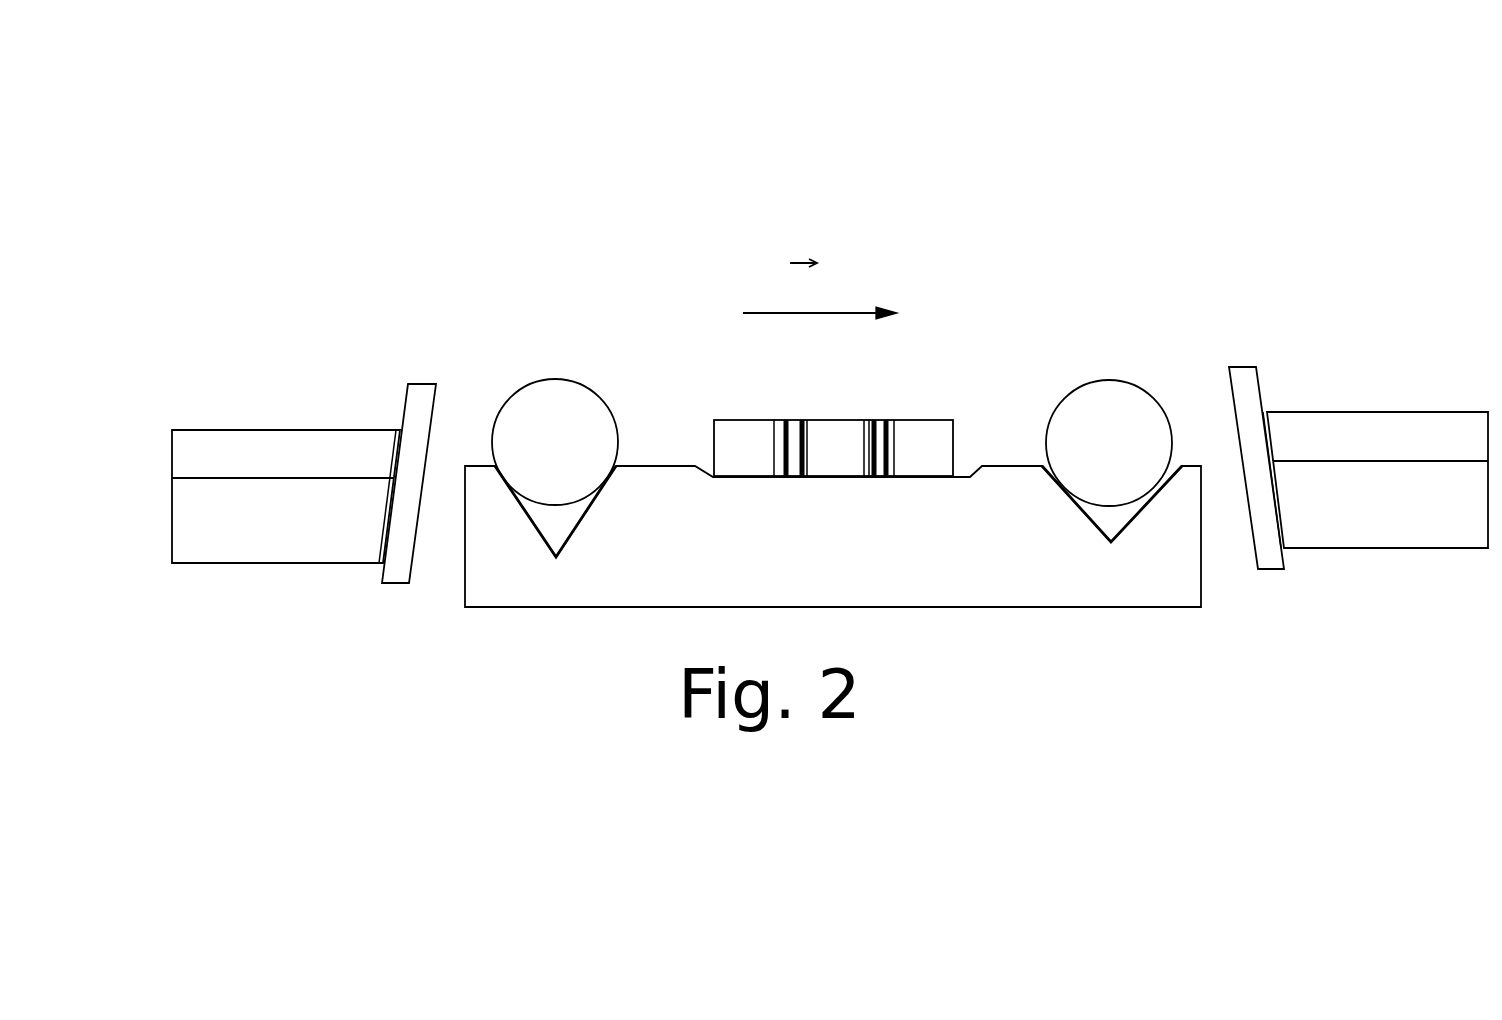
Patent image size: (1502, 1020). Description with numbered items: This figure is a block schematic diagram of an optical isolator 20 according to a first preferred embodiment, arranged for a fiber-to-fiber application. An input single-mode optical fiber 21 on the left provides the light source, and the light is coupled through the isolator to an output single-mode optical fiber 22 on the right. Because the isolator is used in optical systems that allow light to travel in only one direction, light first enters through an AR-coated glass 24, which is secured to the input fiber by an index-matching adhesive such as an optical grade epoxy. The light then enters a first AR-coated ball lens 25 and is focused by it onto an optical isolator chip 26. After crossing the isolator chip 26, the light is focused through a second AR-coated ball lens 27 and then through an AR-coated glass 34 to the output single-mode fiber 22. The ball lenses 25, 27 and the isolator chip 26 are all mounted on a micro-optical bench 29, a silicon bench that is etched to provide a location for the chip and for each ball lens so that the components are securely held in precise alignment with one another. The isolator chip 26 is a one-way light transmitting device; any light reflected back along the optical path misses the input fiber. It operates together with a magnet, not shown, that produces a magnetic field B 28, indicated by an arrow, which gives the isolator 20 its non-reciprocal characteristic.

The optical isolator 20 is at (392, 177).
The input single-mode optical fiber 21 is at (192, 430).
The output single-mode optical fiber 22 is at (1423, 412).
The AR-coated glass 24 is at (433, 412).
The first AR-coated ball lens 25 is at (568, 390).
The optical isolator chip 26 is at (900, 405).
The second AR-coated ball lens 27 is at (1135, 397).
The magnetic field B 28 is at (836, 275).
The micro-optical bench 29 is at (950, 606).
The AR-coated glass 34 is at (1266, 569).